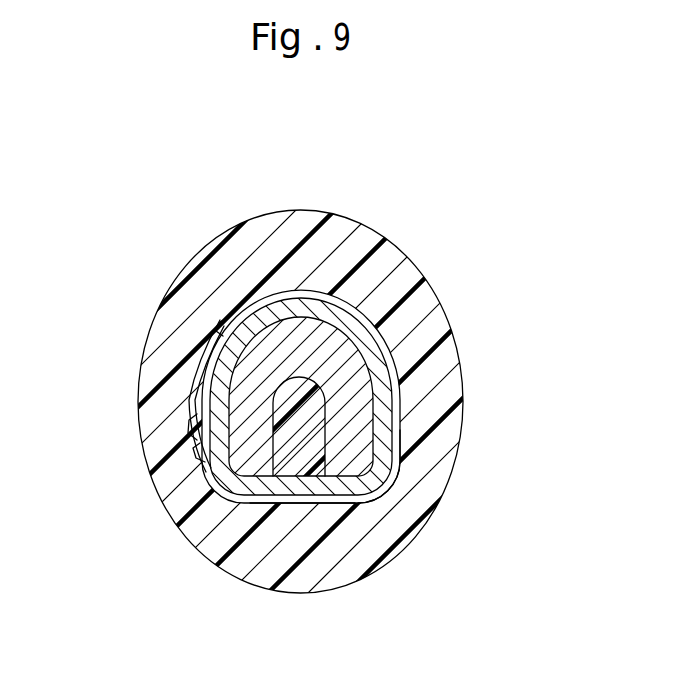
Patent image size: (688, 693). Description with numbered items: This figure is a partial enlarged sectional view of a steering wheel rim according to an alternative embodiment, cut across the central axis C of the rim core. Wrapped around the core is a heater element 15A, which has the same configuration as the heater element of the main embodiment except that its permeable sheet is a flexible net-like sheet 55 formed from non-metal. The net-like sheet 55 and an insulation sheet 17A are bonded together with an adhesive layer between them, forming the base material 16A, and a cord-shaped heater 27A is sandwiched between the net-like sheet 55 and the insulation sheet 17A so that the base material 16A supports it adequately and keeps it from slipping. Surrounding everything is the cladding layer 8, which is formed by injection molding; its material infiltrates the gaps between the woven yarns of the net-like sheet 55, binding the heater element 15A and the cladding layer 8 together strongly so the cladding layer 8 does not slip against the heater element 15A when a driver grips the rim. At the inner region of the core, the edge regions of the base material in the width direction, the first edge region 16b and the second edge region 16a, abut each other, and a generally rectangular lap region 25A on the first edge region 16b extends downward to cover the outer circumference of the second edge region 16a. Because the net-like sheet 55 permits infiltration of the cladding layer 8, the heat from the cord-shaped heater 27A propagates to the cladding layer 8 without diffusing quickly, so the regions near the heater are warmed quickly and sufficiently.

The cladding layer 8 is at (447, 318).
The heater element 15A is at (333, 505).
The base material 16A is at (537, 367).
The second edge region 16a is at (196, 397).
The first edge region 16b is at (203, 377).
The insulation sheet 17A is at (394, 378).
The lap region 25A is at (194, 427).
The cord-shaped heater 27A is at (220, 326).
The net-like sheet 55 is at (392, 462).
The central axis C is at (285, 487).